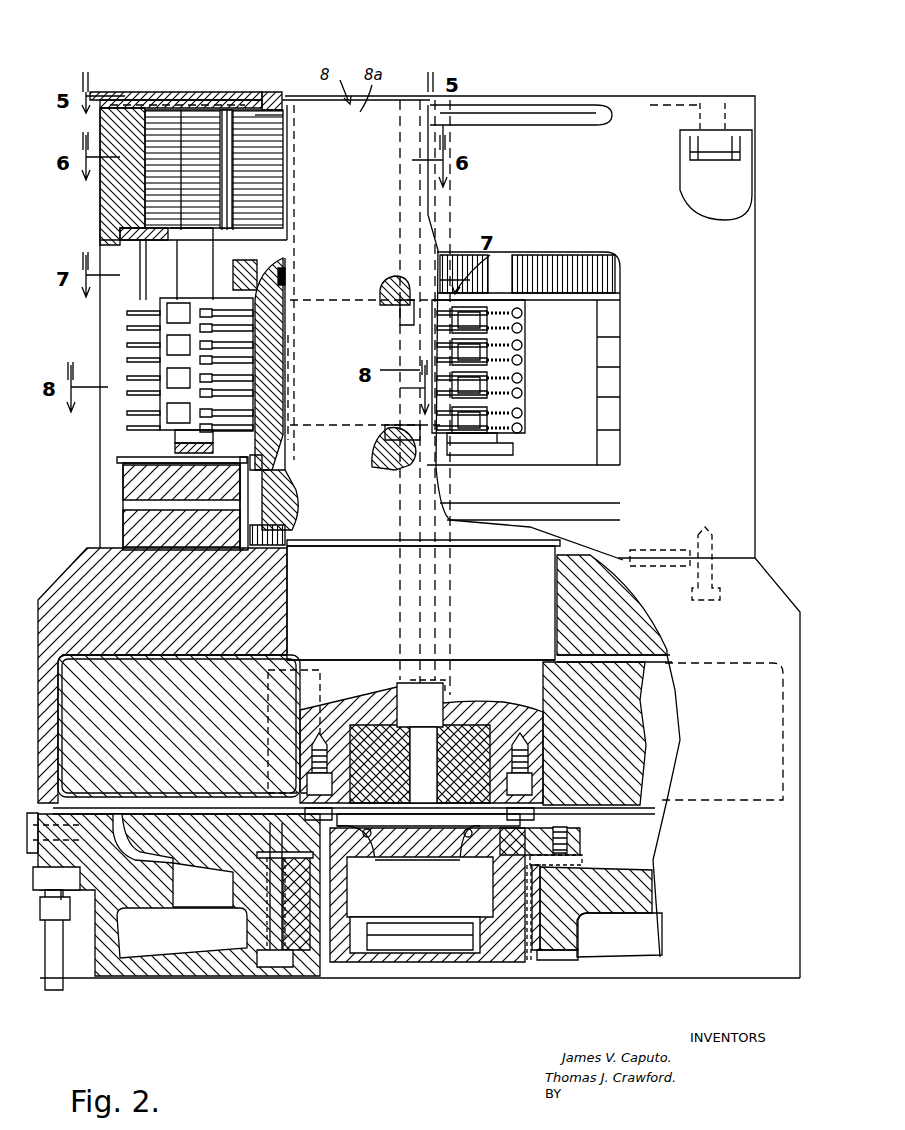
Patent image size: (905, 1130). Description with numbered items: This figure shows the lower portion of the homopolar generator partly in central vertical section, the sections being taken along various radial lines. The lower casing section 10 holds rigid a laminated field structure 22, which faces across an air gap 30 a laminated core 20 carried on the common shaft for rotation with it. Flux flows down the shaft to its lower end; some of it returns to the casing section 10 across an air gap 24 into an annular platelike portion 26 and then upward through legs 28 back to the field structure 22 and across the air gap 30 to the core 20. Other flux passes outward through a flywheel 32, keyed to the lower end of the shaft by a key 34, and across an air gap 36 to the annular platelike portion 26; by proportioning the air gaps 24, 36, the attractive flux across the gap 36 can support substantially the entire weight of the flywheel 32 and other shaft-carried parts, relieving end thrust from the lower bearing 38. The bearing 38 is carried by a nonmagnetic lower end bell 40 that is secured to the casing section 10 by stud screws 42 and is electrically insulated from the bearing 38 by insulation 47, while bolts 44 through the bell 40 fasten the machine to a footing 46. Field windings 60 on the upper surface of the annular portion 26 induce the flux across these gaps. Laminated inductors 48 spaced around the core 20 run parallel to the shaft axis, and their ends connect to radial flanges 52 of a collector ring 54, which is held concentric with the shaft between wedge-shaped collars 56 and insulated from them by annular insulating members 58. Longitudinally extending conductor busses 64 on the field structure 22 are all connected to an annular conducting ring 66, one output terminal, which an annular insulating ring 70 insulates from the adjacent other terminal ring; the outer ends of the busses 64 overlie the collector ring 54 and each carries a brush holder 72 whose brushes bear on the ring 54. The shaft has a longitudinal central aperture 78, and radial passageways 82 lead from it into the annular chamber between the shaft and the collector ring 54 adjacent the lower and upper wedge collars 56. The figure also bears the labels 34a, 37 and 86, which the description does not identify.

The lower casing section 10 is at (625, 118).
The laminated core 20 is at (270, 160).
The laminated field structure 22 is at (192, 127).
The air gap 24 is at (290, 592).
The annular platelike portion 26 is at (78, 565).
The legs 28 is at (100, 312).
The air gap 30 is at (232, 118).
The flywheel 32 is at (200, 731).
The key 34 is at (330, 662).
The terminal board 34a is at (585, 392).
The air gap 36 is at (158, 654).
The guide 37 is at (284, 344).
The lower bearing 38 is at (478, 912).
The lower end bell 40 is at (575, 958).
The stud screws 42 is at (60, 800).
The bolts 44 is at (58, 988).
The footing 46 is at (224, 982).
The insulation 47 is at (242, 922).
The laminated inductors 48 is at (230, 252).
The radial flanges 52 is at (262, 264).
The collector ring 54 is at (262, 380).
The wedge-shaped collars 56 is at (285, 280).
The annular insulating members 58 is at (286, 302).
The field windings 60 is at (112, 483).
The conductor busses 64 is at (185, 246).
The annular conducting ring 66 is at (178, 100).
The annular insulating ring 70 is at (178, 95).
The brush holder 72 is at (170, 352).
The longitudinal central aperture 78 is at (400, 388).
The radial passageways 82 is at (392, 290).
The spindle hub 86 is at (462, 735).